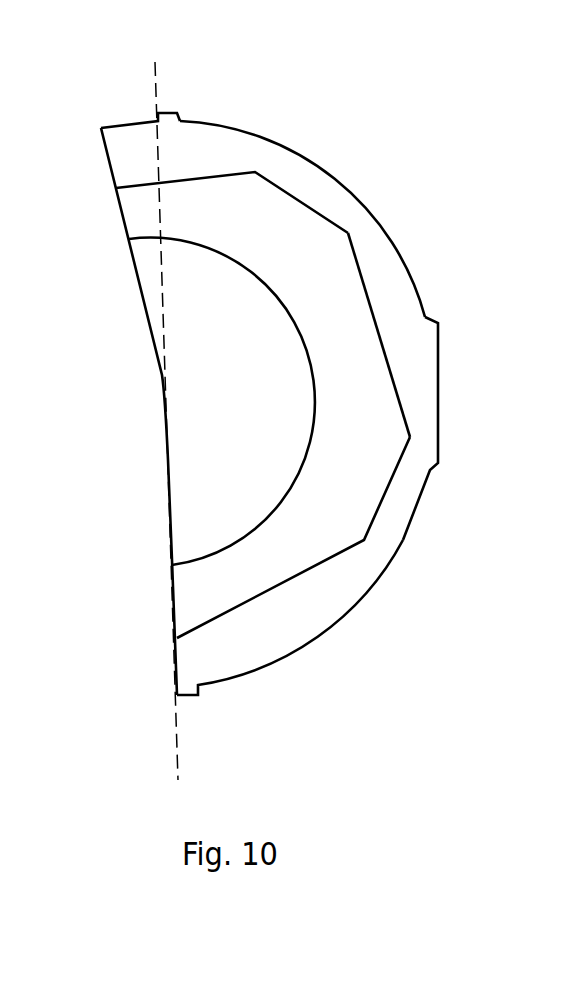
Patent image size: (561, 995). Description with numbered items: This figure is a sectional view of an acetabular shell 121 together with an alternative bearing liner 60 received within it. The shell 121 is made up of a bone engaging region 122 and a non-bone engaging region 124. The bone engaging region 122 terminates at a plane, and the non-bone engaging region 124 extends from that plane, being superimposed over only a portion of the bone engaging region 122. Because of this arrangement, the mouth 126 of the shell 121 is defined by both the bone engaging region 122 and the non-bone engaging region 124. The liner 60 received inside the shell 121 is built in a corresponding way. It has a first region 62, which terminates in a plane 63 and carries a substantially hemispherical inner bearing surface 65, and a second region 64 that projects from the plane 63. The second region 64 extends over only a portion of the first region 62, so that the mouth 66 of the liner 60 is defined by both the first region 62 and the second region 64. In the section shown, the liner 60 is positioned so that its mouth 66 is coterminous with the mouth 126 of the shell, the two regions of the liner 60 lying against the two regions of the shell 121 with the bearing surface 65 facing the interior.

The liner 60 is at (322, 523).
The first region 62 is at (322, 240).
The plane 63 is at (178, 715).
The second region 64 is at (140, 200).
The inner bearing surface 65 is at (318, 387).
The mouth 66 is at (118, 238).
The acetabular shell 121 is at (440, 231).
The bone engaging region 122 is at (425, 377).
The non-bone engaging region 124 is at (135, 148).
The mouth 126 is at (97, 154).